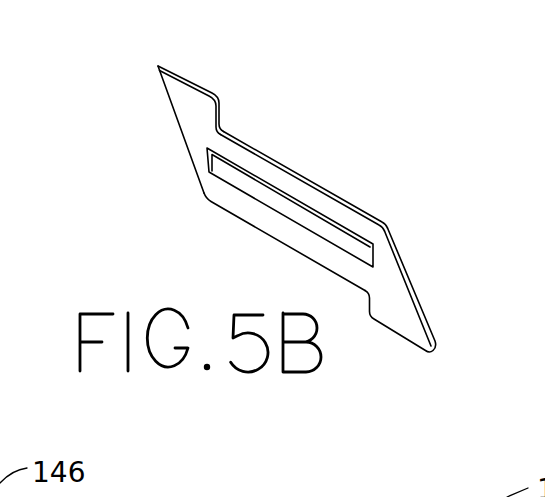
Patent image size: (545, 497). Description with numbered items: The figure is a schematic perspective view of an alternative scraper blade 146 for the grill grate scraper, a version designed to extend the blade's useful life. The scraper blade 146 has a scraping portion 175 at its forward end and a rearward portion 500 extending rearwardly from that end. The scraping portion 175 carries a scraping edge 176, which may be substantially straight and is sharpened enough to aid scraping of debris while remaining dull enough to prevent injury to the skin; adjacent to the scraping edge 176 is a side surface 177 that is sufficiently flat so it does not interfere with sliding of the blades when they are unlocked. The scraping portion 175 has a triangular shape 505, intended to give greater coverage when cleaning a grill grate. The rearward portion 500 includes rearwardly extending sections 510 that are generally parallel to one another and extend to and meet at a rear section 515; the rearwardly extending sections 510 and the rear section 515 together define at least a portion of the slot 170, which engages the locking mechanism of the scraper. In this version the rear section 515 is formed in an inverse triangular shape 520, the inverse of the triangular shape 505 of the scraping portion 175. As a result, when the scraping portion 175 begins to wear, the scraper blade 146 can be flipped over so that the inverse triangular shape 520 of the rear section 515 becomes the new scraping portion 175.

The scraper blade 146 is at (330, 80).
The rearward portion 500 is at (348, 135).
The triangular shape 505 is at (182, 107).
The side surface 177 is at (199, 106).
The scraping edge 176 is at (177, 123).
The scraping portion 175 is at (167, 148).
The slot 170 is at (248, 180).
The rearwardly extending sections 510 is at (287, 236).
The rear section 515 is at (388, 175).
The inverse triangular shape 520 is at (400, 298).